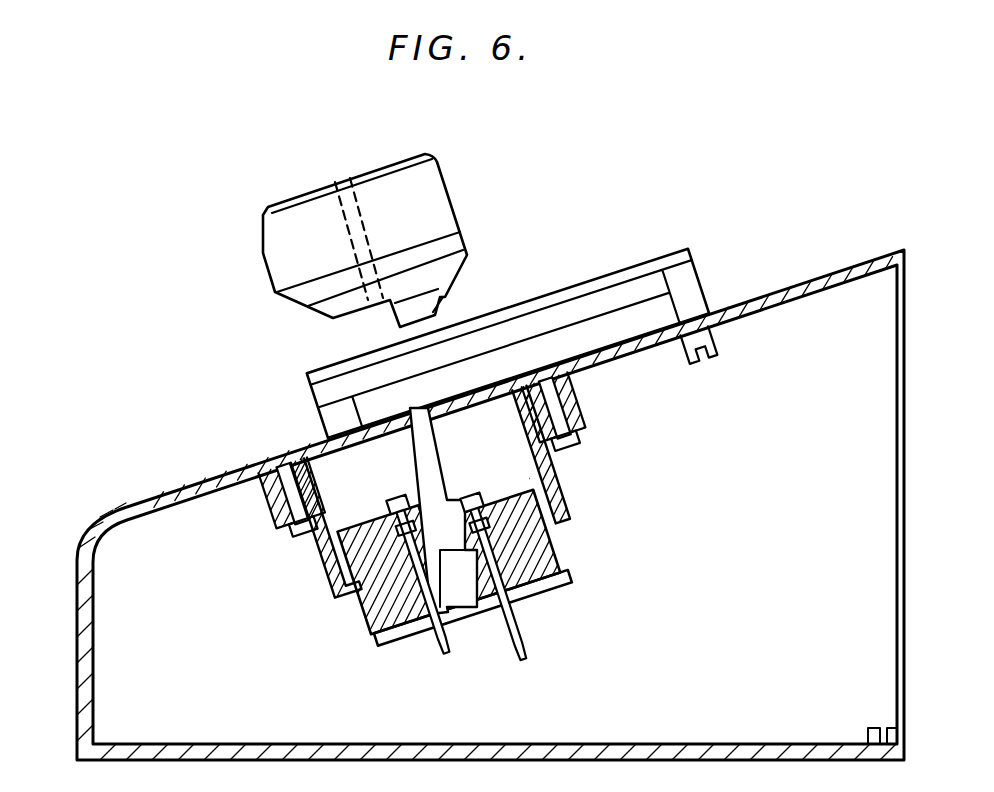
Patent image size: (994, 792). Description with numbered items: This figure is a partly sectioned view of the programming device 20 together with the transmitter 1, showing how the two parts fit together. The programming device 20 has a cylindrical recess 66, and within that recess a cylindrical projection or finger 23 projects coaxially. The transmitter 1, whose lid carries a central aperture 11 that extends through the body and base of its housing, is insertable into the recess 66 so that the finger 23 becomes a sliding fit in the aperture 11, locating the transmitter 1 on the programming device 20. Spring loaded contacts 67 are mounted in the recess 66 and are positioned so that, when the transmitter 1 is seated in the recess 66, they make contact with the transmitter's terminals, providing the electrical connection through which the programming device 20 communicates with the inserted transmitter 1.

The transmitter 1 is at (440, 192).
The central aperture 11 is at (342, 212).
The programming device 20 is at (103, 492).
The cylindrical projection or finger 23 is at (415, 433).
The cylindrical recess 66 is at (493, 437).
The spring loaded contacts 67 is at (395, 497).